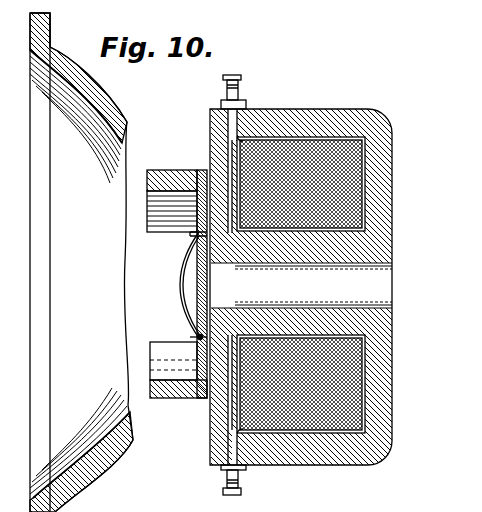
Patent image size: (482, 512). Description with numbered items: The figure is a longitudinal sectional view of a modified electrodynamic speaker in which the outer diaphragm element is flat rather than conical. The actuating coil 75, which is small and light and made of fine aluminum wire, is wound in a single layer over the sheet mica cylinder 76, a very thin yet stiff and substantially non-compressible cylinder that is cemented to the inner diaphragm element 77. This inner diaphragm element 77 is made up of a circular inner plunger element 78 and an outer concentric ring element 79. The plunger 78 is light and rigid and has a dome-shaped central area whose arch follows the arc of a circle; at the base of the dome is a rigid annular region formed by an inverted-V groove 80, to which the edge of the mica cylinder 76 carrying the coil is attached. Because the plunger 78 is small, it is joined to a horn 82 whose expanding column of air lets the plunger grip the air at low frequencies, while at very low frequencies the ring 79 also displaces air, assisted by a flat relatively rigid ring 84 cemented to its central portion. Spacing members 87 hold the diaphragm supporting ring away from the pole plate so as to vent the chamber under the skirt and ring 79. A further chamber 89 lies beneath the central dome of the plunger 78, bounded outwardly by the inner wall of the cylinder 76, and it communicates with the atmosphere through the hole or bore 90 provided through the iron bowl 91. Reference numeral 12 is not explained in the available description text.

The valve casing 12 is at (217, 176).
The actuating coil 75 is at (225, 234).
The sheet mica cylinder 76 is at (212, 320).
The inner diaphragm element 77 is at (182, 284).
The inner plunger element 78 is at (187, 303).
The outer concentric ring element 79 is at (190, 200).
The groove 80 is at (196, 337).
The horn 82 is at (164, 182).
The flat relatively rigid ring 84 is at (195, 372).
The spacing members 87 is at (207, 399).
The chamber 89 is at (195, 259).
The hole or bore 90 is at (368, 286).
The iron bowl 91 is at (372, 123).